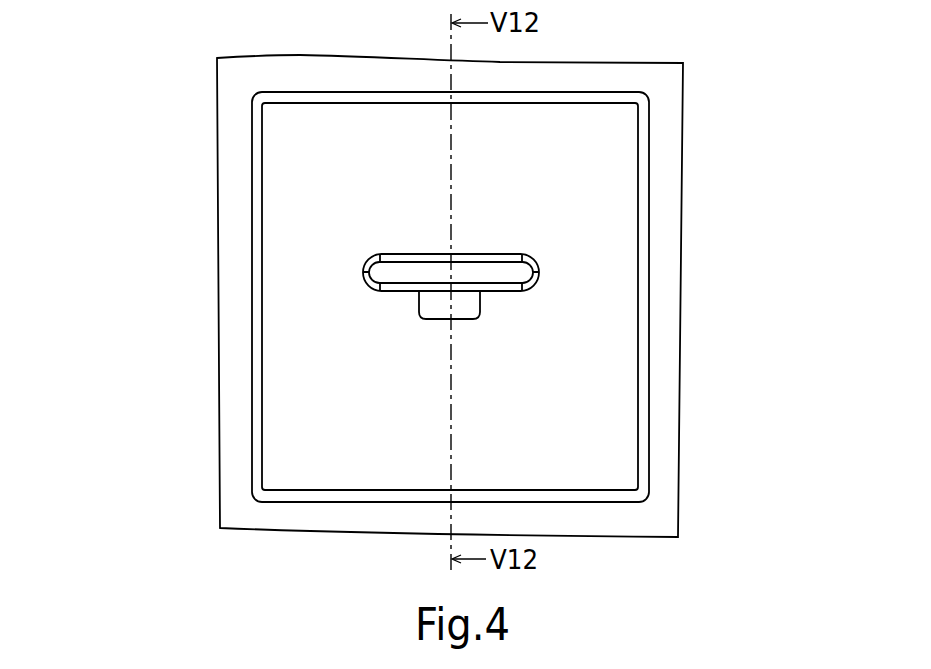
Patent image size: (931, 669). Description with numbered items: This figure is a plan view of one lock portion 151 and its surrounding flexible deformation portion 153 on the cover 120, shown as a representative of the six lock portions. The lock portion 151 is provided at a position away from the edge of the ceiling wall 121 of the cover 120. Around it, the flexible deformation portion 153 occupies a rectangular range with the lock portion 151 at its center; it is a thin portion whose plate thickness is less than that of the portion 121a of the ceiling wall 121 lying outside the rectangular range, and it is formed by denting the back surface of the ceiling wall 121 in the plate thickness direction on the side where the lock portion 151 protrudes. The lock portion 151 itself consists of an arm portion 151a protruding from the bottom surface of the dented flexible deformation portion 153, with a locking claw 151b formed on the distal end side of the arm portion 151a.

The cover 120 is at (398, 273).
The ceiling wall 121 is at (280, 57).
The portion outside the rectangular range 121a is at (239, 163).
The lock portion 151 is at (368, 278).
The arm portion 151a is at (490, 255).
The locking claw 151b is at (478, 318).
The flexible deformation portion 153 is at (590, 260).